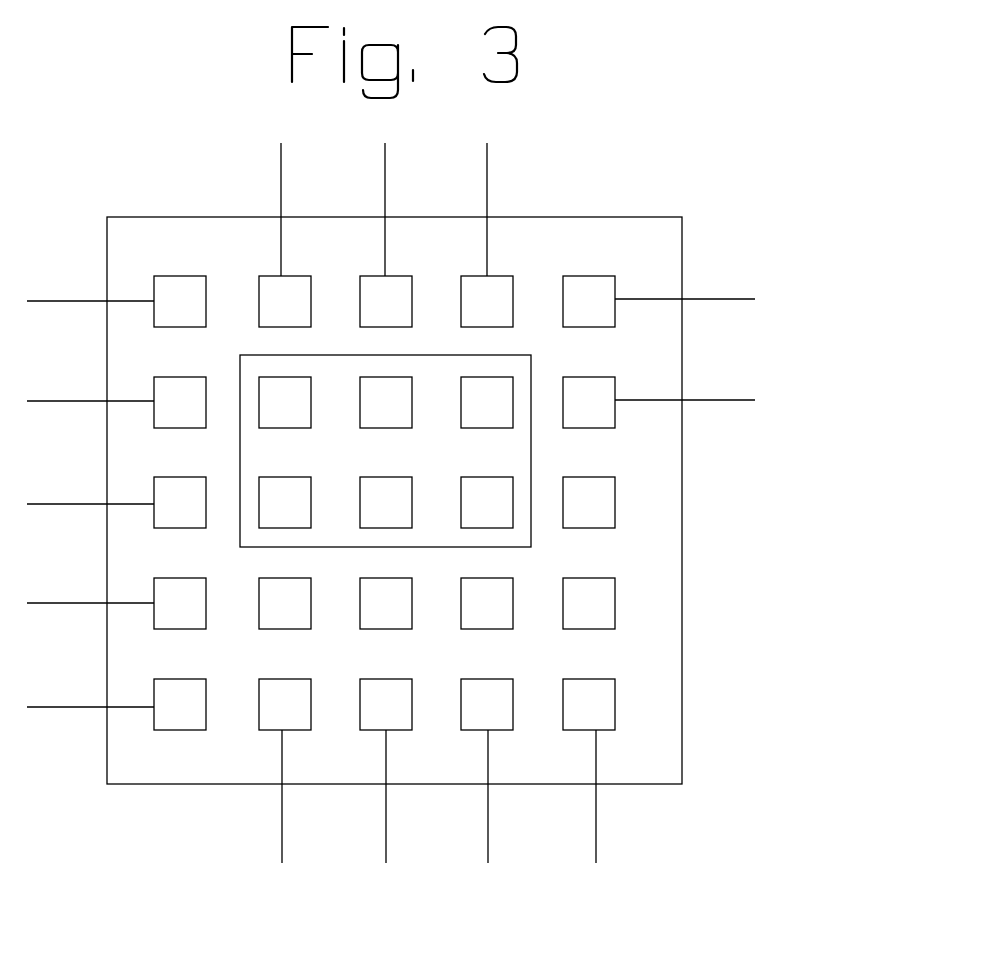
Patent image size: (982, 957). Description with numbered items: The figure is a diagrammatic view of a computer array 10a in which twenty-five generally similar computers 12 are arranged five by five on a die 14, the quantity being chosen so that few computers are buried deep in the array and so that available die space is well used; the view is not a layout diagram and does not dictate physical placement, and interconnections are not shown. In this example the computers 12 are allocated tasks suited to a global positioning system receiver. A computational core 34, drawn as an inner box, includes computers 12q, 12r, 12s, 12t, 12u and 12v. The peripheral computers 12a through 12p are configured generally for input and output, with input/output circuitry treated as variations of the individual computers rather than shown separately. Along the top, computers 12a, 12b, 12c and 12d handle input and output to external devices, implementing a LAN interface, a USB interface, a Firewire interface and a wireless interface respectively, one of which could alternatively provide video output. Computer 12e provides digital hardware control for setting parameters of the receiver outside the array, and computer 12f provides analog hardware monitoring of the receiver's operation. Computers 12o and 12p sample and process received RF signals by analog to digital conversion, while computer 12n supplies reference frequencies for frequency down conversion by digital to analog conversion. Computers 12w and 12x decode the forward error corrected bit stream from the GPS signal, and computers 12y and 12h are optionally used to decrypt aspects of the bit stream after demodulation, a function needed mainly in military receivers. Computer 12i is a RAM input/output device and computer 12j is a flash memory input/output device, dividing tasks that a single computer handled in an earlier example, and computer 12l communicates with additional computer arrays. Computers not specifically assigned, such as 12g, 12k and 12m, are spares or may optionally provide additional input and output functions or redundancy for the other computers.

The computer array 10a is at (412, 492).
The computer 12 is at (641, 522).
The die 14 is at (233, 764).
The computational core 34 is at (520, 557).
The computer 12a is at (180, 301).
The computer 12b is at (285, 301).
The computer 12c is at (386, 301).
The computer 12d is at (487, 301).
The computer 12e is at (589, 301).
The computer 12f is at (589, 402).
The computer 12g is at (589, 502).
The computer 12h is at (589, 603).
The computer 12i is at (589, 704).
The computer 12j is at (487, 704).
The computer 12k is at (386, 704).
The computer 12l is at (285, 704).
The computer 12m is at (180, 704).
The computer 12n is at (180, 603).
The computer 12o is at (180, 502).
The computer 12p is at (180, 402).
The computer 12q is at (285, 402).
The computer 12r is at (386, 402).
The computer 12s is at (487, 402).
The computer 12t is at (487, 502).
The computer 12u is at (386, 502).
The computer 12v is at (285, 502).
The computer 12w is at (285, 603).
The computer 12x is at (386, 603).
The computer 12y is at (487, 603).